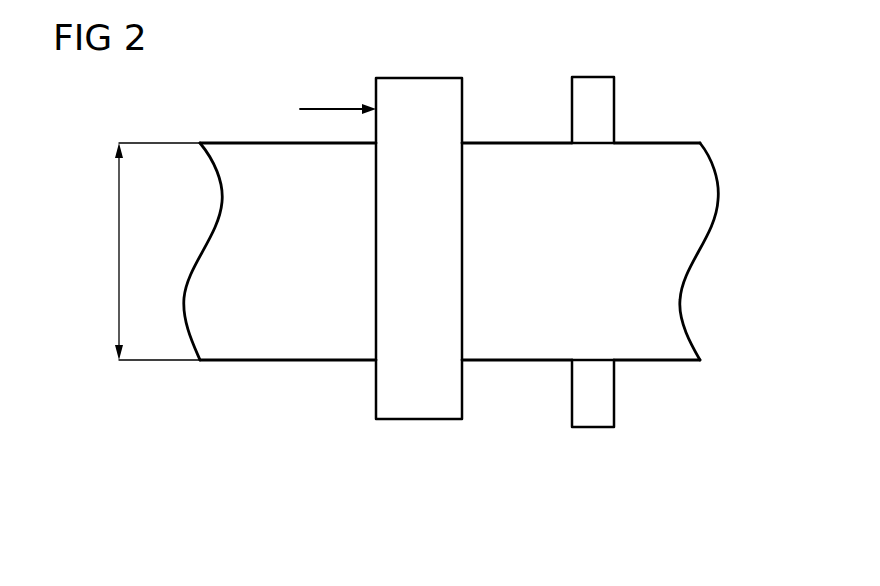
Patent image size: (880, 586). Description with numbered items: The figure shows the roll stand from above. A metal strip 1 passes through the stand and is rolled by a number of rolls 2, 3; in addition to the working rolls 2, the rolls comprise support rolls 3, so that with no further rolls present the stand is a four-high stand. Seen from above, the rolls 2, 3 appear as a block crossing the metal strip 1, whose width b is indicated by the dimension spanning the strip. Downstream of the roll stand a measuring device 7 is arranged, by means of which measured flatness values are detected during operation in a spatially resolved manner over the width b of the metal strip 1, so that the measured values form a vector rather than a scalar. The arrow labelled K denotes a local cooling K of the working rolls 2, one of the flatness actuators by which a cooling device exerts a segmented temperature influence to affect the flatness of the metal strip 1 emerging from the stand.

The metal strip 1 is at (277, 361).
The working rolls 2 is at (419, 291).
The support rolls 3 is at (416, 420).
The measuring device 7 is at (593, 428).
The width of the metal strip b is at (119, 248).
The local cooling K is at (327, 109).